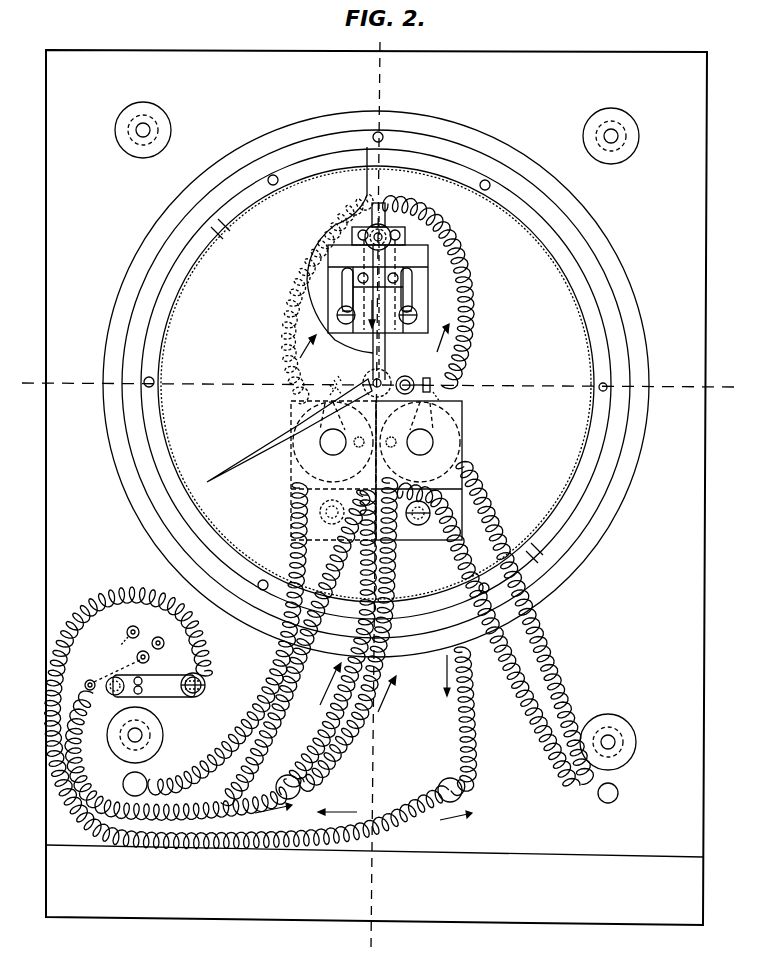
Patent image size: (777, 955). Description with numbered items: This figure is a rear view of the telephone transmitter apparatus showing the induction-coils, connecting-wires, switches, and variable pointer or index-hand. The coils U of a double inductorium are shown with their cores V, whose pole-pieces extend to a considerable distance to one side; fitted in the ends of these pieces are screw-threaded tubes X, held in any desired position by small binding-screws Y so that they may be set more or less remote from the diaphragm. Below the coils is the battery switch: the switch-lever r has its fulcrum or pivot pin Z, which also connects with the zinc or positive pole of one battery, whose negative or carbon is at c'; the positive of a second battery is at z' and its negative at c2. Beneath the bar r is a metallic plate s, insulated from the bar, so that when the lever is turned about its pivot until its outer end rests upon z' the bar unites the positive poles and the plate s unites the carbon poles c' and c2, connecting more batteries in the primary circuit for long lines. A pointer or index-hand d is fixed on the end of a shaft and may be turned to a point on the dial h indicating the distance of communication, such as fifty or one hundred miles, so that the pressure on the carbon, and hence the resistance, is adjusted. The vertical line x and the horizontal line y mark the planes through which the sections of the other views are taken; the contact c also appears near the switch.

The pointer or index-hand d is at (252, 446).
The dial h is at (376, 384).
The coils of a double inductorium U is at (375, 470).
The cores V is at (376, 442).
The screw-threaded tubes X is at (385, 380).
The binding-screws Y is at (381, 382).
The fulcrum or pivot pin Z is at (198, 683).
The positive of a second battery z' is at (126, 635).
The contact c is at (112, 682).
The negative or carbon of one battery c' is at (137, 654).
The negative of a second battery c2 is at (164, 645).
The switch-lever r is at (167, 692).
The metallic plate s is at (141, 696).
The section line X X x is at (373, 490).
The section line Y Y y is at (375, 376).